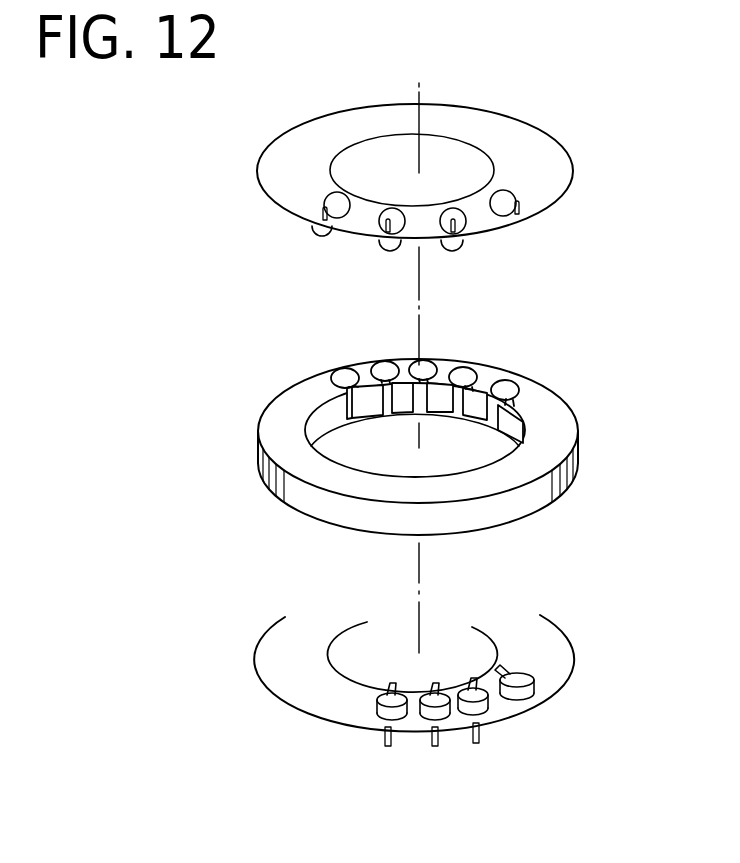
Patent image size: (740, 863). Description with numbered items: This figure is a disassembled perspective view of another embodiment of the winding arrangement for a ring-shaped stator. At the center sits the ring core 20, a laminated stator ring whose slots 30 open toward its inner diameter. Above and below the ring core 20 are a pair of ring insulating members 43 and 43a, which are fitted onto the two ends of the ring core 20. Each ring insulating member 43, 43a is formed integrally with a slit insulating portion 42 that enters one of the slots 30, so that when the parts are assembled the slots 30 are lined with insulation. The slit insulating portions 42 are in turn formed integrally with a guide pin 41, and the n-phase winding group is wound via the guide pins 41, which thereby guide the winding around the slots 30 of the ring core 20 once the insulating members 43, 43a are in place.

The ring core 20 is at (557, 418).
The slots 30 is at (375, 362).
The guide pin 41 is at (323, 216).
The slit insulating portion 42 is at (462, 244).
The ring insulating member 43 is at (569, 637).
The ring insulating member 43a is at (513, 131).